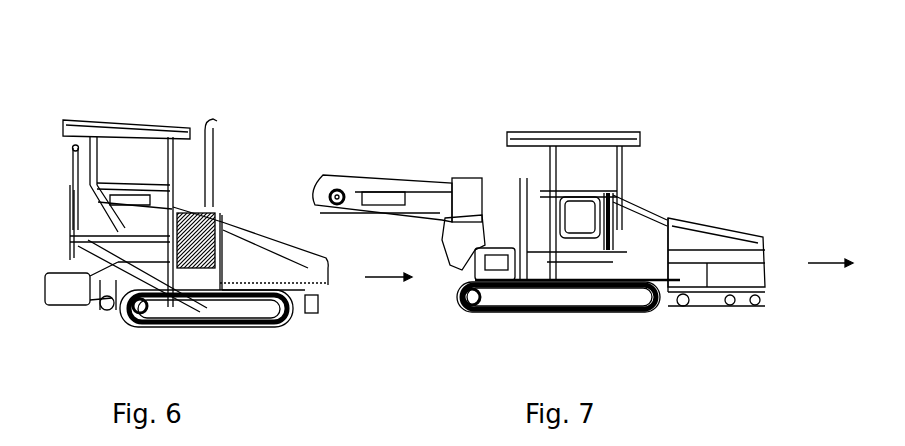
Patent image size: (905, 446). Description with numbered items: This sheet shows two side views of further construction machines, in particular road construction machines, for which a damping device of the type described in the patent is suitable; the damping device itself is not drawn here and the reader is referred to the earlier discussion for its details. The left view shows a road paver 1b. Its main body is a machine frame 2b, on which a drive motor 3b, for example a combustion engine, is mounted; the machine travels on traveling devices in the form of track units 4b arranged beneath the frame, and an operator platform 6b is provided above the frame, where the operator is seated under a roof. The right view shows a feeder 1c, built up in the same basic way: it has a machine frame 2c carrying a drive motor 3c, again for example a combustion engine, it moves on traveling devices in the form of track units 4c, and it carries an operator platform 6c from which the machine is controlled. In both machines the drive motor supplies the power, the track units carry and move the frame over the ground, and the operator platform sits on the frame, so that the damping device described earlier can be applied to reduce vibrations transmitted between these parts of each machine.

In FIG. 6, the road paver 1b is at (266, 108).
In FIG. 6, the machine frame 2b is at (153, 252).
In FIG. 6, the drive motor 3b is at (207, 228).
In FIG. 6, the track units 4b is at (247, 323).
In FIG. 6, the operator platform 6b is at (118, 145).
In FIG. 7, the feeder 1c is at (682, 107).
In FIG. 7, the machine frame 2c is at (558, 265).
In FIG. 7, the drive motor 3c is at (622, 227).
In FIG. 7, the track units 4c is at (580, 292).
In FIG. 7, the operator platform 6c is at (583, 158).